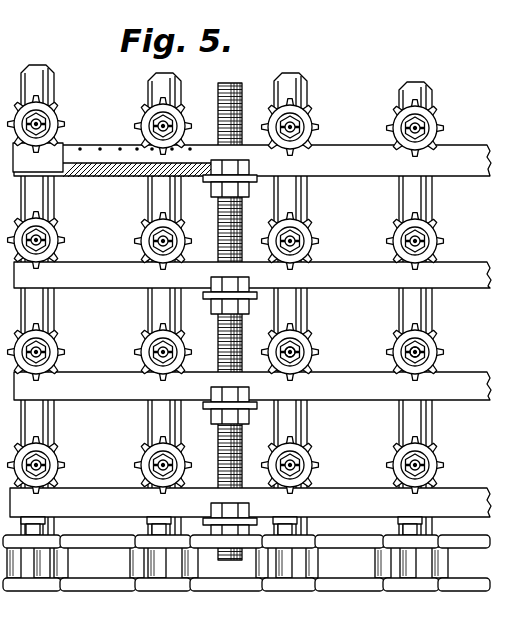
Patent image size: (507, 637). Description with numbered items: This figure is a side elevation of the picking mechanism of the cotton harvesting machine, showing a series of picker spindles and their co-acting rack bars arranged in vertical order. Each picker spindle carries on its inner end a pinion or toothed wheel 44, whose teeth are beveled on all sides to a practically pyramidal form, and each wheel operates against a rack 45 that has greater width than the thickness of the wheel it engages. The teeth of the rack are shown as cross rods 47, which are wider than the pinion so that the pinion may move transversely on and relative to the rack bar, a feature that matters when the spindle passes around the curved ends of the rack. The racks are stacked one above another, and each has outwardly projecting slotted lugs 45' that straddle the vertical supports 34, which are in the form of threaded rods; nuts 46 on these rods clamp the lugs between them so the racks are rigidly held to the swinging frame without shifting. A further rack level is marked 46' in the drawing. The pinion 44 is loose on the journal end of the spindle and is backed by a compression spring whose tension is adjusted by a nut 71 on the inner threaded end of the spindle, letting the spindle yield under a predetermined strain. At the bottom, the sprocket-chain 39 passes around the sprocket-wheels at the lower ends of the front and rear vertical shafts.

The vertical supports 34 is at (243, 383).
The sprocket-chain 39 is at (246, 554).
The toothed wheel 44 is at (139, 124).
The rack 45 is at (250, 330).
The slotted lugs 45' is at (252, 386).
The nuts 46 is at (246, 344).
The cross bar 46' is at (252, 275).
The cross rods 47 is at (118, 148).
The nut 71 is at (398, 372).